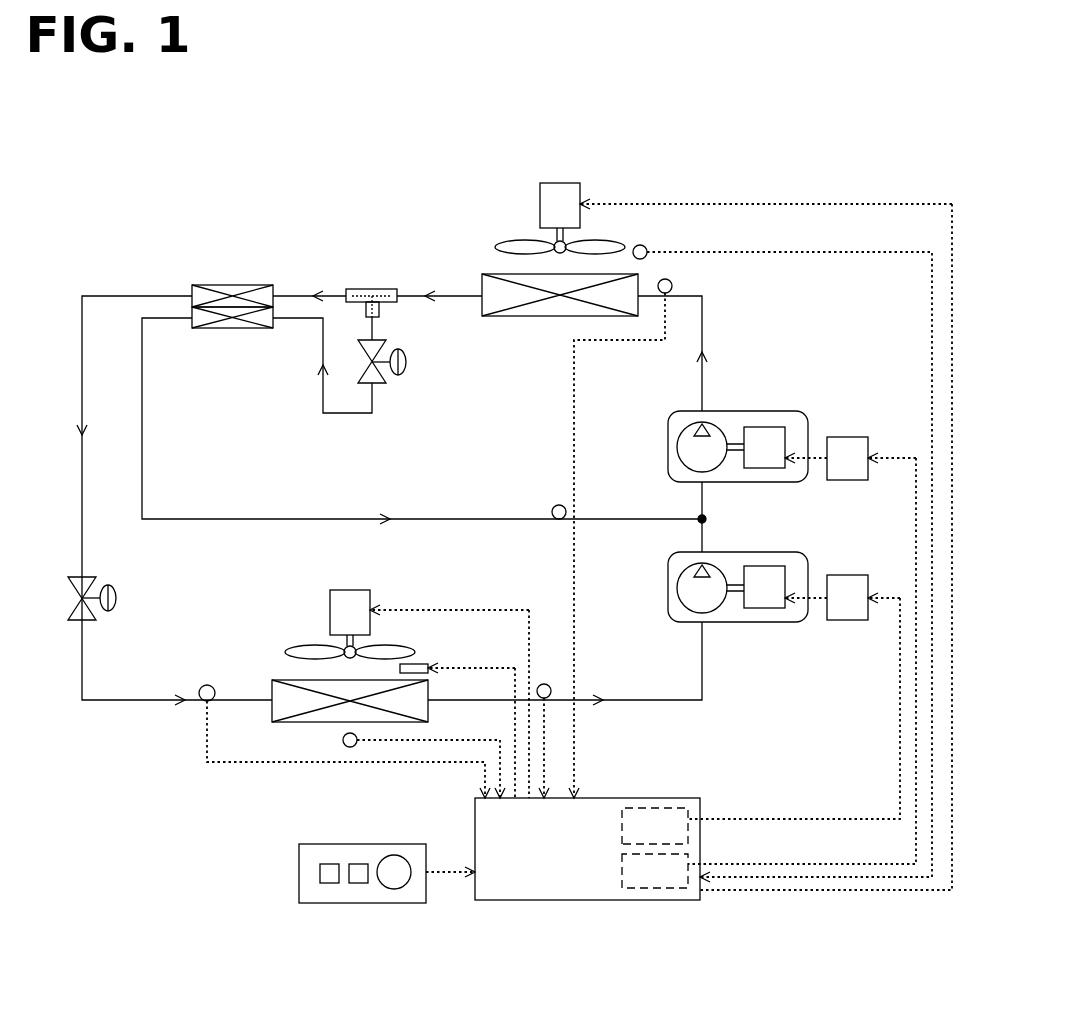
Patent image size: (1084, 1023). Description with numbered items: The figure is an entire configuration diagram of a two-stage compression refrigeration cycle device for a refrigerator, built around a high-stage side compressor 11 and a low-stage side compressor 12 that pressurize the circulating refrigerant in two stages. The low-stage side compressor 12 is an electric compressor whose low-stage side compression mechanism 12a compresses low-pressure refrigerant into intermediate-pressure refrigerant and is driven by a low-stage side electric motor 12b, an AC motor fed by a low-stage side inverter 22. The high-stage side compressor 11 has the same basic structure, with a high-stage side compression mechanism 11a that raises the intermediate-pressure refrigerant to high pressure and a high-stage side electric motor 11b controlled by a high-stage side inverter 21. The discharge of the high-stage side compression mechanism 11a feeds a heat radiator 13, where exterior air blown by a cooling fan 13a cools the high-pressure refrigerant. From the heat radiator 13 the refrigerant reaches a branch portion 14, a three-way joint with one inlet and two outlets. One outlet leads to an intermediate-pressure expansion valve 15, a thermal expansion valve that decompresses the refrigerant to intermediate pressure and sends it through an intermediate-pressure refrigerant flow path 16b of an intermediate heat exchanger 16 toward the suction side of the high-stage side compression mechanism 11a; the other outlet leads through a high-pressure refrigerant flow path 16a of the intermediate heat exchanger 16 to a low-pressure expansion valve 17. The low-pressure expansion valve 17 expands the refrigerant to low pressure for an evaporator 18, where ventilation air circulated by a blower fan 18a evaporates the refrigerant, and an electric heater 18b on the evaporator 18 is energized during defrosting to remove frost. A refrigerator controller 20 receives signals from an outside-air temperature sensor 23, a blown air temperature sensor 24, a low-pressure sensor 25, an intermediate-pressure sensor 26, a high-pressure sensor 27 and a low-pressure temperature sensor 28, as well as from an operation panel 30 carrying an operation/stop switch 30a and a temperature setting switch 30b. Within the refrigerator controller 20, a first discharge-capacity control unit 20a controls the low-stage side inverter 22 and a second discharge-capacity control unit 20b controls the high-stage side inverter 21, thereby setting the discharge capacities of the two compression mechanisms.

The high-stage side compressor 11 is at (696, 446).
The high-stage side compression mechanism 11a is at (677, 447).
The high-stage side electric motor 11b is at (767, 468).
The low-stage side compressor 12 is at (697, 614).
The low-stage side compression mechanism 12a is at (677, 588).
The low-stage side electric motor 12b is at (767, 608).
The heat radiator 13 is at (482, 286).
The cooling fan 13a is at (540, 205).
The branch portion 14 is at (358, 289).
The intermediate-pressure expansion valve 15 is at (406, 360).
The intermediate heat exchanger 16 is at (200, 298).
The high-pressure refrigerant flow path 16a is at (243, 285).
The intermediate-pressure refrigerant flow path 16b is at (243, 328).
The low-pressure expansion valve 17 is at (114, 588).
The evaporator 18 is at (272, 684).
The blower fan 18a is at (330, 608).
The electric heater 18b is at (428, 664).
The refrigerator controller 20 is at (591, 851).
The first discharge-capacity control unit 20a is at (672, 808).
The second discharge-capacity control unit 20b is at (672, 888).
The high-stage side inverter 21 is at (847, 437).
The low-stage side inverter 22 is at (847, 575).
The outside-air temperature sensor 23 is at (647, 248).
The blown air temperature sensor 24 is at (343, 740).
The low-pressure sensor 25 is at (544, 684).
The intermediate-pressure sensor 26 is at (555, 506).
The high-pressure sensor 27 is at (672, 283).
The low-pressure temperature sensor 28 is at (200, 686).
The operation panel 30 is at (359, 874).
The operation/stop switch 30a is at (329, 883).
The temperature setting switch 30b is at (358, 883).